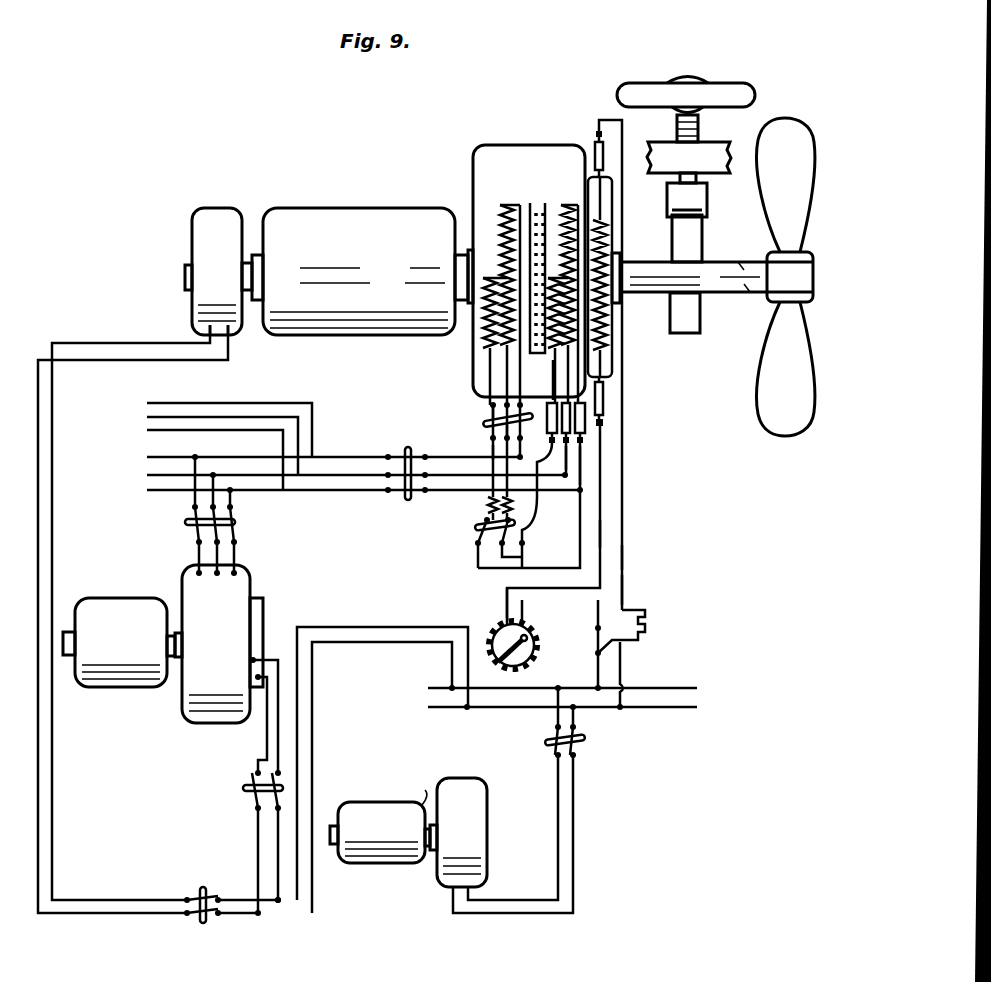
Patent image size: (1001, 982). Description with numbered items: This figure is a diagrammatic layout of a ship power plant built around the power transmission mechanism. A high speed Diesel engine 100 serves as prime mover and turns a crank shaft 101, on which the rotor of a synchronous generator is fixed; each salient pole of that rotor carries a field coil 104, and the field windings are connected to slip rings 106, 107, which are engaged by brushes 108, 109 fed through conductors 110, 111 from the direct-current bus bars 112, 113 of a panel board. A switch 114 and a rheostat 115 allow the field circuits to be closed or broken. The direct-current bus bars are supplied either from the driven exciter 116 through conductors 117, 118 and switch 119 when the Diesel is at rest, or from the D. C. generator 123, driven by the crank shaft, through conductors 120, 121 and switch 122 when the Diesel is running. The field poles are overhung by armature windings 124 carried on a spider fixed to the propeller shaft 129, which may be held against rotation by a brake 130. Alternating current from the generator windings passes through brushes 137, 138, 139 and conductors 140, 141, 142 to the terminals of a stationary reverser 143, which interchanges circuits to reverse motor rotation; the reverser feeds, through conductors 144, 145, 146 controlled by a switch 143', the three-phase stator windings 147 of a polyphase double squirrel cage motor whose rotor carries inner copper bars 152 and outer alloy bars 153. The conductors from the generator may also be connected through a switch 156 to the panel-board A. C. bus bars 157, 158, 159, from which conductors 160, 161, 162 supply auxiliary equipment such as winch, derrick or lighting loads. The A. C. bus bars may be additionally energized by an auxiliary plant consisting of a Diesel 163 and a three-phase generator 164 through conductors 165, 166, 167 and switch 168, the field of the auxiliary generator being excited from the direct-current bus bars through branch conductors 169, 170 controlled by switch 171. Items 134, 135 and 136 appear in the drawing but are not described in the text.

The Diesel engine 100 is at (328, 180).
The crank shaft 101 is at (457, 268).
The field coil 104 is at (612, 330).
The slip ring 106 is at (594, 150).
The slip ring 107 is at (604, 416).
The brush 108 is at (596, 132).
The brush 109 is at (604, 424).
The conductor 110 is at (603, 535).
The conductor 111 is at (625, 558).
The direct-current bus bar 112 is at (640, 709).
The direct-current bus bar 113 is at (655, 688).
The switch 114 is at (632, 642).
The rheostat 115 is at (540, 648).
The exciter 116 is at (472, 818).
The conductor 117 is at (516, 900).
The conductor 118 is at (552, 913).
The switch 119 is at (585, 741).
The conductor 120 is at (233, 898).
The conductor 121 is at (285, 914).
The switch 122 is at (203, 924).
The D. C. generator 123 is at (205, 226).
The armature windings 124 is at (607, 232).
The propeller shaft 129 is at (740, 263).
The brake 130 is at (676, 240).
The fuses 134 is at (585, 432).
The fuse 135 is at (605, 395).
The conductor 136 is at (548, 400).
The brush 137 is at (572, 446).
The brush 138 is at (583, 470).
The brush 139 is at (537, 497).
The conductor 140 is at (625, 580).
The conductor 141 is at (556, 545).
The conductor 142 is at (492, 448).
The stationary reverser 143 is at (473, 557).
The switch 143' is at (442, 411).
The conductor 144 is at (488, 503).
The conductor 145 is at (478, 532).
The conductor 146 is at (486, 421).
The stator windings 147 is at (500, 223).
The inner copper bars 152 is at (538, 208).
The outer alloy bars 153 is at (568, 208).
The switch 156 is at (405, 447).
The A. C. bus bar 157 is at (322, 492).
The A. C. bus bar 158 is at (362, 477).
The A. C. bus bar 159 is at (340, 452).
The conductor 160 is at (160, 431).
The conductor 161 is at (160, 417).
The conductor 162 is at (165, 402).
The Diesel 163 is at (117, 610).
The three-phase generator 164 is at (247, 595).
The conductor 165 is at (219, 557).
The conductor 166 is at (236, 548).
The conductor 167 is at (195, 546).
The switch 168 is at (236, 522).
The branch conductor 169 is at (277, 838).
The branch conductor 170 is at (256, 827).
The switch 171 is at (246, 788).